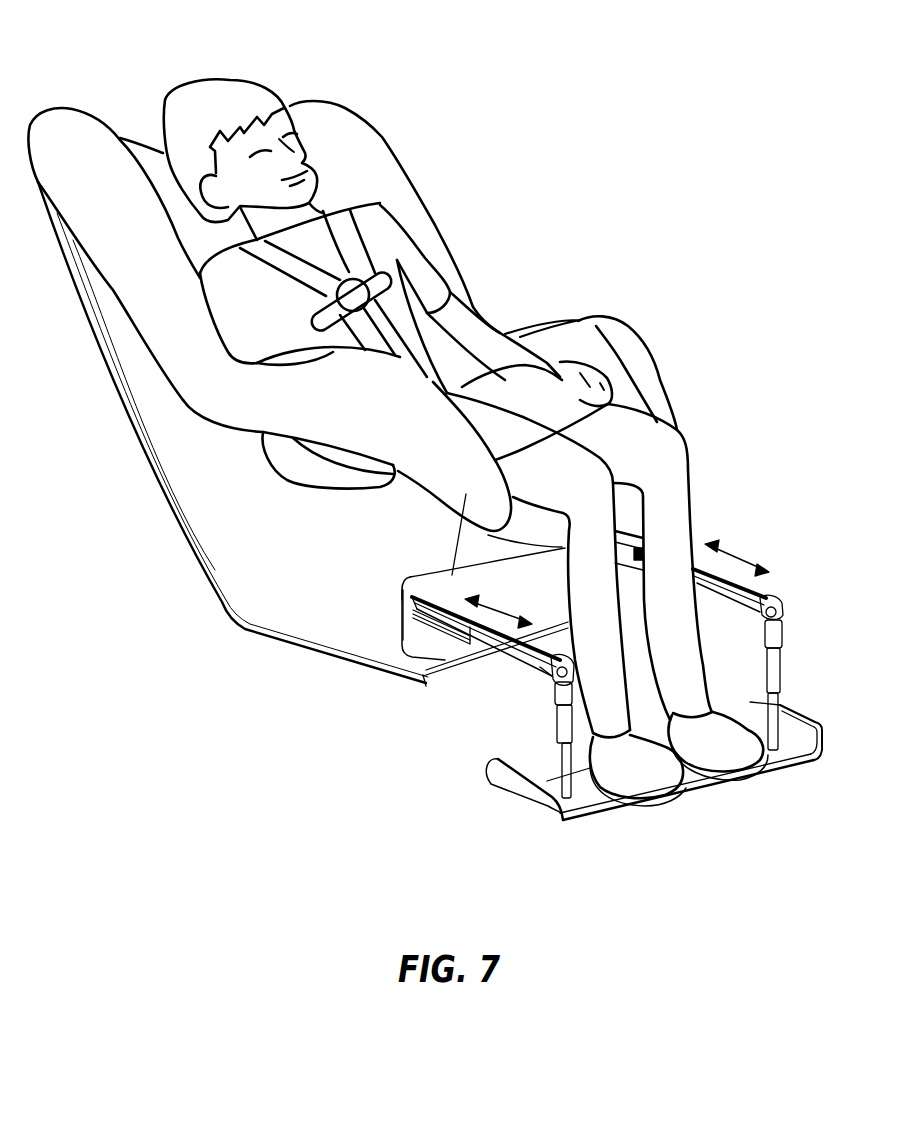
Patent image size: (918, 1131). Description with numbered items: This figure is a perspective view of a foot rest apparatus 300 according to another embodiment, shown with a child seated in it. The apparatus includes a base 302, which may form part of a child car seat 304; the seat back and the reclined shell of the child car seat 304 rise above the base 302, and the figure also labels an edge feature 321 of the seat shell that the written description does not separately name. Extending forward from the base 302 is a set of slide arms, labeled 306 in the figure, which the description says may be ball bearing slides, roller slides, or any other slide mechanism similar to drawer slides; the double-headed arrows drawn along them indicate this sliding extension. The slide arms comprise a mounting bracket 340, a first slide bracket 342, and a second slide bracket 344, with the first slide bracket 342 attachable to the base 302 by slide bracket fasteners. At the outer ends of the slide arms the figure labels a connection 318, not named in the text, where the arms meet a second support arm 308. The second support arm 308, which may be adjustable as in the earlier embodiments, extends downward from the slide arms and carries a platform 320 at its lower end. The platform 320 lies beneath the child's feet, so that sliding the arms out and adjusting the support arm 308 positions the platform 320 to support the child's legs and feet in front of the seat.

The foot rest apparatus 300 is at (687, 120).
The base 302 is at (287, 610).
The child car seat 304 is at (380, 132).
The extendable rail 306 is at (527, 663).
The second support arm 308 is at (773, 660).
The pivot joint 318 is at (783, 610).
The platform 320 is at (598, 797).
The seat shell edge 321 is at (423, 577).
The mounting bracket 340 is at (400, 624).
The first slide bracket 342 is at (403, 648).
The second slide bracket 344 is at (540, 667).